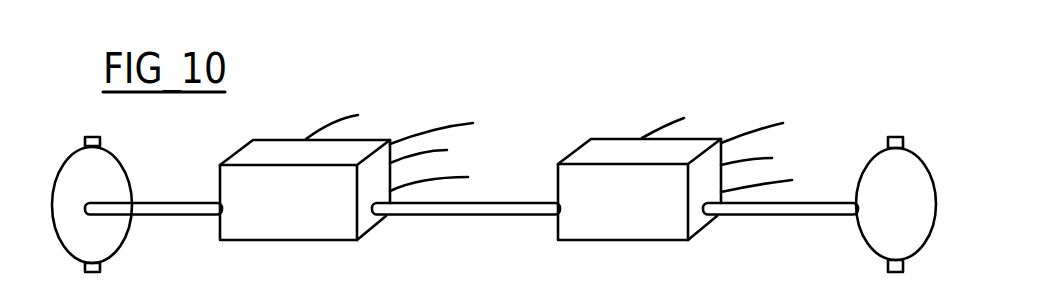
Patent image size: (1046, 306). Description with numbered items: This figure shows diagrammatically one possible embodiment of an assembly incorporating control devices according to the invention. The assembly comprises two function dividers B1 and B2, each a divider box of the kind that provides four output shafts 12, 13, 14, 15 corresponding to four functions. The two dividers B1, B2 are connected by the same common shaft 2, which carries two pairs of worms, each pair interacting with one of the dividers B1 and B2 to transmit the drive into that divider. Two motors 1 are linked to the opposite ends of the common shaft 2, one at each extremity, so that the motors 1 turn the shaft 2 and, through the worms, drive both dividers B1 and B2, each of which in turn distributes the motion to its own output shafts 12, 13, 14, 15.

The motor 1 is at (110, 177).
The shaft 2 is at (443, 215).
The function divider B1 is at (270, 118).
The function divider B2 is at (641, 113).
The output shaft 12 is at (243, 183).
The output shaft 13 is at (338, 183).
The output shaft 14 is at (243, 228).
The output shaft 15 is at (338, 228).